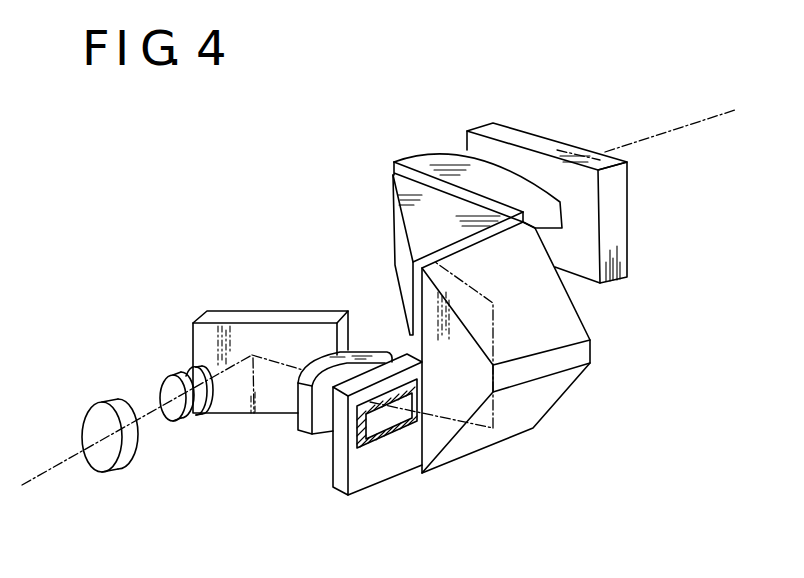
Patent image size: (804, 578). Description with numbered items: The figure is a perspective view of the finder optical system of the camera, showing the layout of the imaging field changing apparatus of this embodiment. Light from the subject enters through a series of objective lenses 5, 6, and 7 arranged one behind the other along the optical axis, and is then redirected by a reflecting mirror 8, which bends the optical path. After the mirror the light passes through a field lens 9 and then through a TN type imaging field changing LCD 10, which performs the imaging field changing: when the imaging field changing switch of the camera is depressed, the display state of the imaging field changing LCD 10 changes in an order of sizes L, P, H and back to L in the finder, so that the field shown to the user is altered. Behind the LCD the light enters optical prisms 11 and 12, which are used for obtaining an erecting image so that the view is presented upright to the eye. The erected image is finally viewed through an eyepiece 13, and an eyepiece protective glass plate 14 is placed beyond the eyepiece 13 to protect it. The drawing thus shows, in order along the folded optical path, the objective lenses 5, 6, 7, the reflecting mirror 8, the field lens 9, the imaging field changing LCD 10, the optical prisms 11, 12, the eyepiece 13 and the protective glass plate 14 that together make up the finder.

The objective lens 5 is at (82, 423).
The objective lens 6 is at (160, 390).
The objective lens 7 is at (187, 367).
The reflecting mirror 8 is at (258, 318).
The field lens 9 is at (297, 435).
The TN type imaging field changing LCD 10 is at (357, 495).
The optical prism 11 is at (563, 390).
The optical prism 12 is at (413, 227).
The eyepiece 13 is at (432, 152).
The eyepiece protective glass plate 14 is at (565, 150).